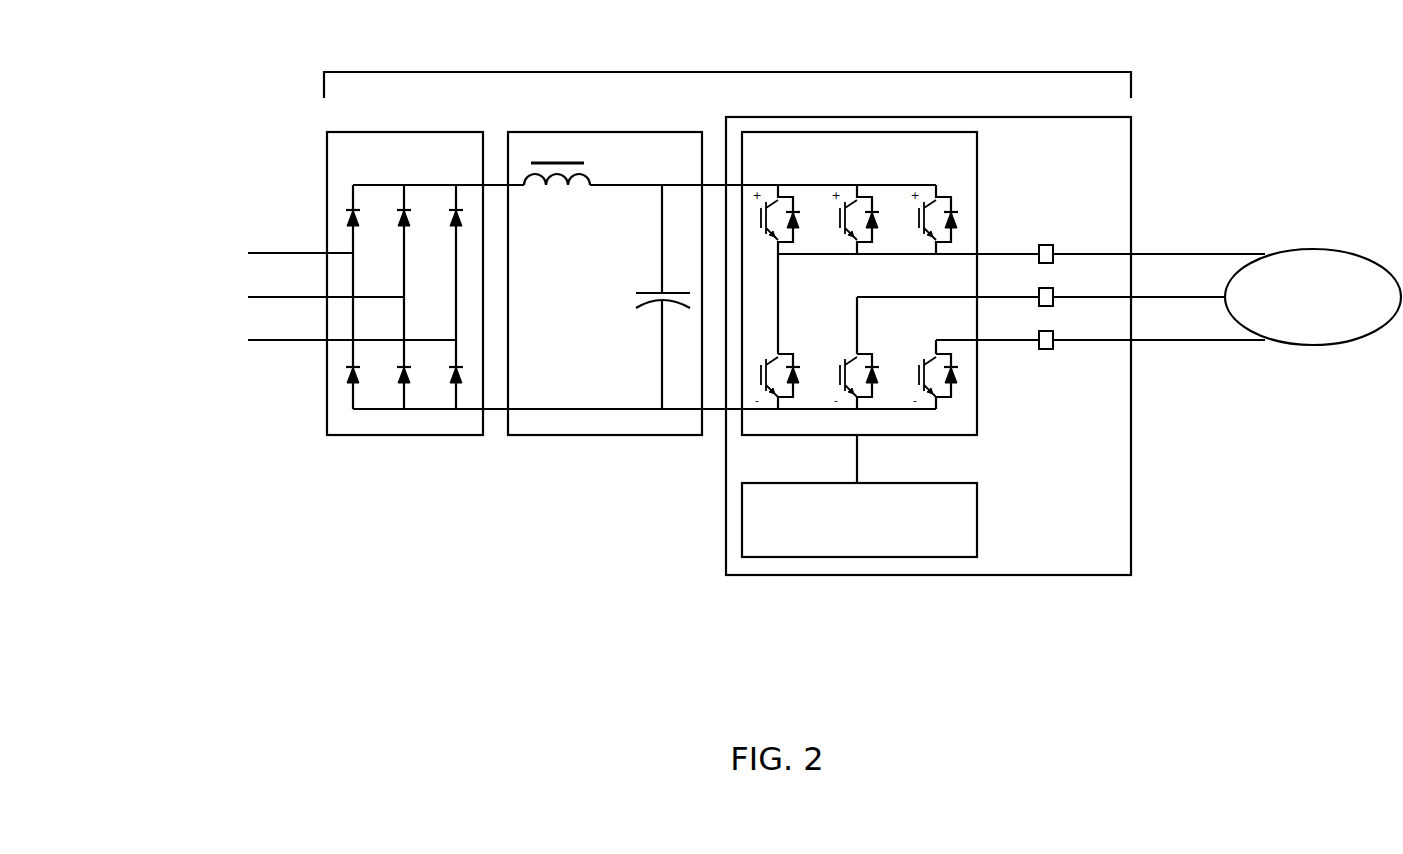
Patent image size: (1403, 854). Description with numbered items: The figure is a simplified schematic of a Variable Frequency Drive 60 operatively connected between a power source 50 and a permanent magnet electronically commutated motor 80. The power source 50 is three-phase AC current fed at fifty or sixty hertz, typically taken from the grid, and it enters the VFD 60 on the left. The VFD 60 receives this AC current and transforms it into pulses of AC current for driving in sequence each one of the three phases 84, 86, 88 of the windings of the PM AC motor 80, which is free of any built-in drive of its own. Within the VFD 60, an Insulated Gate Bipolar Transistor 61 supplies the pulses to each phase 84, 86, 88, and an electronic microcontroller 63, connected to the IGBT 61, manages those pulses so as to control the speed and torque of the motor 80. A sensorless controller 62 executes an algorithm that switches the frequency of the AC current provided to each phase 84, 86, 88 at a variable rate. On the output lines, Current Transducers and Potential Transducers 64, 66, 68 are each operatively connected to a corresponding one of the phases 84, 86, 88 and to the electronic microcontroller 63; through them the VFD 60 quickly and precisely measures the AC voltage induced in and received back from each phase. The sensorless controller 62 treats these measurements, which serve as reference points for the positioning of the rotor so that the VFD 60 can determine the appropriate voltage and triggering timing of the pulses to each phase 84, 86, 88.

The power source 50 is at (194, 268).
The Variable Frequency Drive 60 is at (733, 72).
The Insulated Gate Bipolar Transistor 61 is at (977, 430).
The sensorless controller 62 is at (1060, 577).
The electronic microcontroller 63 is at (859, 496).
The Current Transducer and Potential Transducer 64 is at (1050, 245).
The Current Transducer and Potential Transducer 66 is at (1041, 291).
The Current Transducer and Potential Transducer 68 is at (1043, 350).
The permanent magnet electronically commutated motor 80 is at (1313, 297).
The first phase 84 is at (1270, 252).
The second phase 86 is at (1225, 297).
The third phase 88 is at (1270, 345).